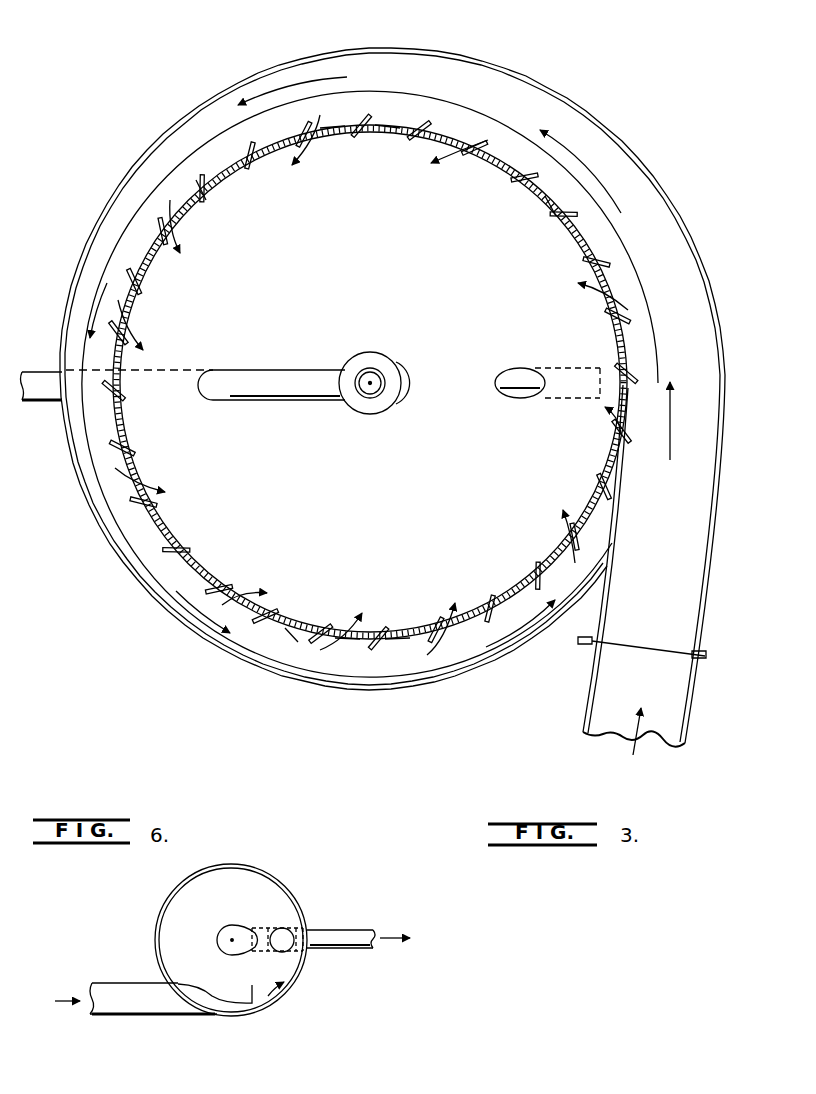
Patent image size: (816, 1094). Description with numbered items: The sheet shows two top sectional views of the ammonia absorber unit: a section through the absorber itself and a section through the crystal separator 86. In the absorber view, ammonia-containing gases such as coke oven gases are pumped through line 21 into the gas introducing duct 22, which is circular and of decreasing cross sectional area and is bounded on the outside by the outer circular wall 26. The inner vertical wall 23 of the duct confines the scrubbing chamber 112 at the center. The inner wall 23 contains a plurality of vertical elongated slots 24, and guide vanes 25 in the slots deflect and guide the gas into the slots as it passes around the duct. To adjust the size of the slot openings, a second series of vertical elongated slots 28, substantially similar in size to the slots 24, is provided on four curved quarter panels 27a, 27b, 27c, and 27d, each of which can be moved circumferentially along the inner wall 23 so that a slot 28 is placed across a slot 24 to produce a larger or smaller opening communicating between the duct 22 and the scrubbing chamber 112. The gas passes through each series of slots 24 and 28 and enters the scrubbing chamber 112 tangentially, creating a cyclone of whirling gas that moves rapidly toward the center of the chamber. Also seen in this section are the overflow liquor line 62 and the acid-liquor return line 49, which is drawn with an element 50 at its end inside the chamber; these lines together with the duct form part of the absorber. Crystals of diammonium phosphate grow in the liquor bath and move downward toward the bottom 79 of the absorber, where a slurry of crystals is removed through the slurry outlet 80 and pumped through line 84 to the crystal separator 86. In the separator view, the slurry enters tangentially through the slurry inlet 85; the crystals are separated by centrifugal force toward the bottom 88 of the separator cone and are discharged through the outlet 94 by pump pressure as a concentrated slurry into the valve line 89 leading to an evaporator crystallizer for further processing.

In FIG. 3, the line 21 is at (690, 704).
In FIG. 3, the gas introducing duct 22 is at (645, 150).
In FIG. 3, the inner vertical wall 23 is at (367, 128).
In FIG. 3, the vertical elongated slots 24 is at (248, 156).
In FIG. 3, the guide vanes 25 is at (246, 160).
In FIG. 3, the outer circular wall 26 is at (345, 50).
In FIG. 3, the curved quarter panel 27a is at (390, 132).
In FIG. 3, the curved quarter panel 27b is at (338, 135).
In FIG. 3, the curved quarter panel 27c is at (345, 640).
In FIG. 3, the curved quarter panel 27d is at (398, 632).
In FIG. 3, the second series of vertical elongated slots 28 is at (206, 192).
In FIG. 3, the acid-liquor return line 49 is at (548, 371).
In FIG. 3, the nozzle 50 is at (506, 397).
In FIG. 3, the overflow liquor line 62 is at (250, 372).
In FIG. 3, the bottom 79 is at (363, 414).
In FIG. 3, the slurry outlet 80 is at (408, 375).
In FIG. 3, the scrubbing chamber 112 is at (381, 506).
In FIG. 6, the line 84 is at (112, 1016).
In FIG. 6, the slurry inlet 85 is at (254, 1003).
In FIG. 6, the crystal separator 86 is at (274, 886).
In FIG. 6, the bottom 88 is at (229, 927).
In FIG. 6, the valve line 89 is at (336, 931).
In FIG. 6, the outlet 94 is at (250, 934).